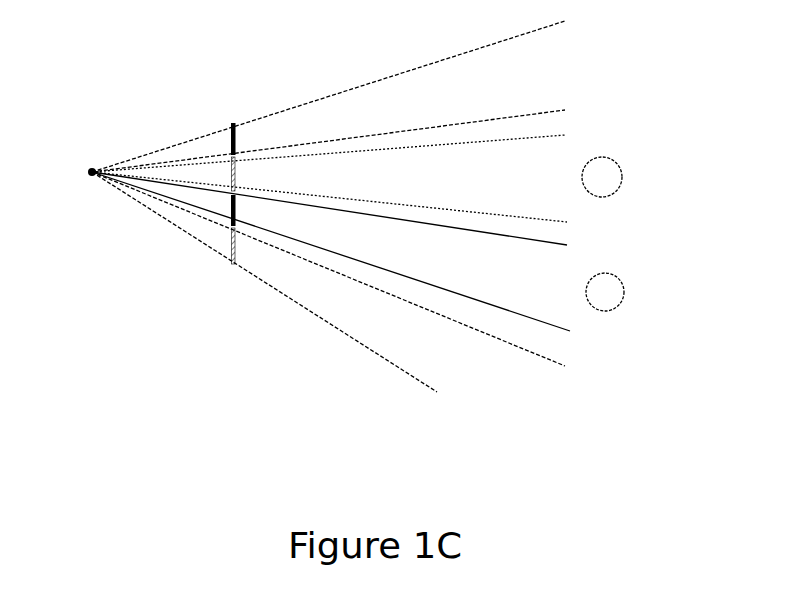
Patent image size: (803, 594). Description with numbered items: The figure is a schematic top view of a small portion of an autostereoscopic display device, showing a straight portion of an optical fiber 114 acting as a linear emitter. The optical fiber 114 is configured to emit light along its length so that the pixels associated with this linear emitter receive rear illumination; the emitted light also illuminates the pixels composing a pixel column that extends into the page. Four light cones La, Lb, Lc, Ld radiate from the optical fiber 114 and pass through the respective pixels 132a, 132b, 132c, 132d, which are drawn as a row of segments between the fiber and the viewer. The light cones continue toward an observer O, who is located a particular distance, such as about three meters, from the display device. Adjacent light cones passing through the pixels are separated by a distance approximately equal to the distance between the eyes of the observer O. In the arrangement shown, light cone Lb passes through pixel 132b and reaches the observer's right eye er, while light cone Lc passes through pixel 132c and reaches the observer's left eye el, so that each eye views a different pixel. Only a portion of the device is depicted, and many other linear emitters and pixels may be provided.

The optical fiber 114 is at (86, 158).
The pixel 132a is at (232, 120).
The pixel 132b is at (236, 168).
The pixel 132c is at (236, 214).
The pixel 132d is at (236, 245).
The light cone La is at (382, 78).
The light cone Lb is at (480, 215).
The light cone Lc is at (480, 303).
The light cone Ld is at (378, 358).
The right eye er is at (620, 164).
The left eye el is at (623, 291).
The observer O is at (682, 226).